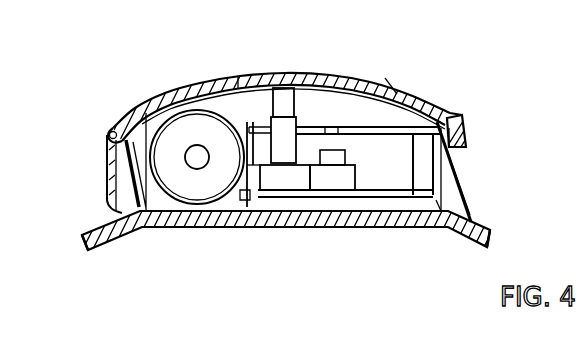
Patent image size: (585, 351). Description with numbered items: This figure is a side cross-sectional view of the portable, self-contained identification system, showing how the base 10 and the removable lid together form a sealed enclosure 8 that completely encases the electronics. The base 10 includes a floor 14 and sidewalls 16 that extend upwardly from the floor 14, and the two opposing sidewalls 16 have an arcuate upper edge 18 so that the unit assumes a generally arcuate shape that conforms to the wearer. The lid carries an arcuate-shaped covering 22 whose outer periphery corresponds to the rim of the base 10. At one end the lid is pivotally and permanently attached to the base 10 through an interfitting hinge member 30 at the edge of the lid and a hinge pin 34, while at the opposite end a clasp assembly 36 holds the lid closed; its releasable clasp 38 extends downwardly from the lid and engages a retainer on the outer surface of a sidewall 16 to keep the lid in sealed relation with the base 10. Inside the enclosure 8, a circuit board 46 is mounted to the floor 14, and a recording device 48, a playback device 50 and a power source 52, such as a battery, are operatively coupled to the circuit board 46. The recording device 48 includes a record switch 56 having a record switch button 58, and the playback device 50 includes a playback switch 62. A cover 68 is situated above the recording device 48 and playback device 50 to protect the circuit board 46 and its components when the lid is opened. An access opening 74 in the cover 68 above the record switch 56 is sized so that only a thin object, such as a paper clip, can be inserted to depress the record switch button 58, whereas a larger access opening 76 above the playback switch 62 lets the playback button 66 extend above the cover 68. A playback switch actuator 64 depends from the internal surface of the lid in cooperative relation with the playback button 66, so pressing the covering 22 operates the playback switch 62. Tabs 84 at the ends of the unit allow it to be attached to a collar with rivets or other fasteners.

The sealed enclosure 8 is at (386, 182).
The base 10 is at (397, 113).
The floor 14 is at (221, 229).
The sidewalls 16 is at (134, 150).
The arcuate upper edge 18 is at (375, 127).
The arcuate-shaped covering 22 is at (172, 92).
The hinge member 30 is at (113, 122).
The hinge pin 34 is at (108, 134).
The clasp assembly 36 is at (462, 116).
The releasable clasp 38 is at (466, 134).
The circuit board 46 is at (432, 226).
The recording device 48 is at (337, 180).
The playback device 50 is at (278, 183).
The power source 52 is at (173, 192).
The record switch 56 is at (328, 180).
The record switch button 58 is at (437, 152).
The playback switch 62 is at (242, 77).
The playback switch actuator 64 is at (286, 100).
The playback button 66 is at (288, 127).
The cover 68 is at (389, 84).
The access opening 74 is at (333, 128).
The larger access opening 76 is at (270, 128).
The tabs 84 is at (80, 236).